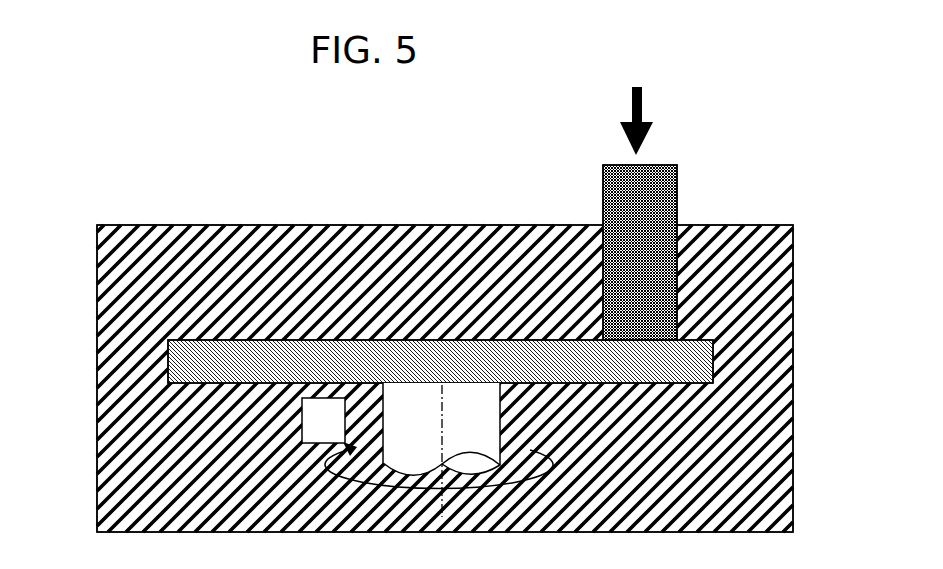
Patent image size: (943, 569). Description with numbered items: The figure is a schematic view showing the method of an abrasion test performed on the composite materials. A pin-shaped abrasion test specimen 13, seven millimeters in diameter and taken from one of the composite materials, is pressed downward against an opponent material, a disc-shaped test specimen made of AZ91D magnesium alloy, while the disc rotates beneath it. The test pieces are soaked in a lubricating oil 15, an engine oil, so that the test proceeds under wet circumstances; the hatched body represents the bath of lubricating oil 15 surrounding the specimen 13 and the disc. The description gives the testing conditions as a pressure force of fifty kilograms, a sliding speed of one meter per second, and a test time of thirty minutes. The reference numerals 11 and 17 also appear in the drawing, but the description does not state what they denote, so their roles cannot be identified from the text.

The bonding apparatus 11 is at (164, 140).
The pin-shaped abrasion test specimen 13 is at (677, 192).
The lubricating oil 15 is at (122, 345).
The semiconductor chip 17 is at (713, 356).